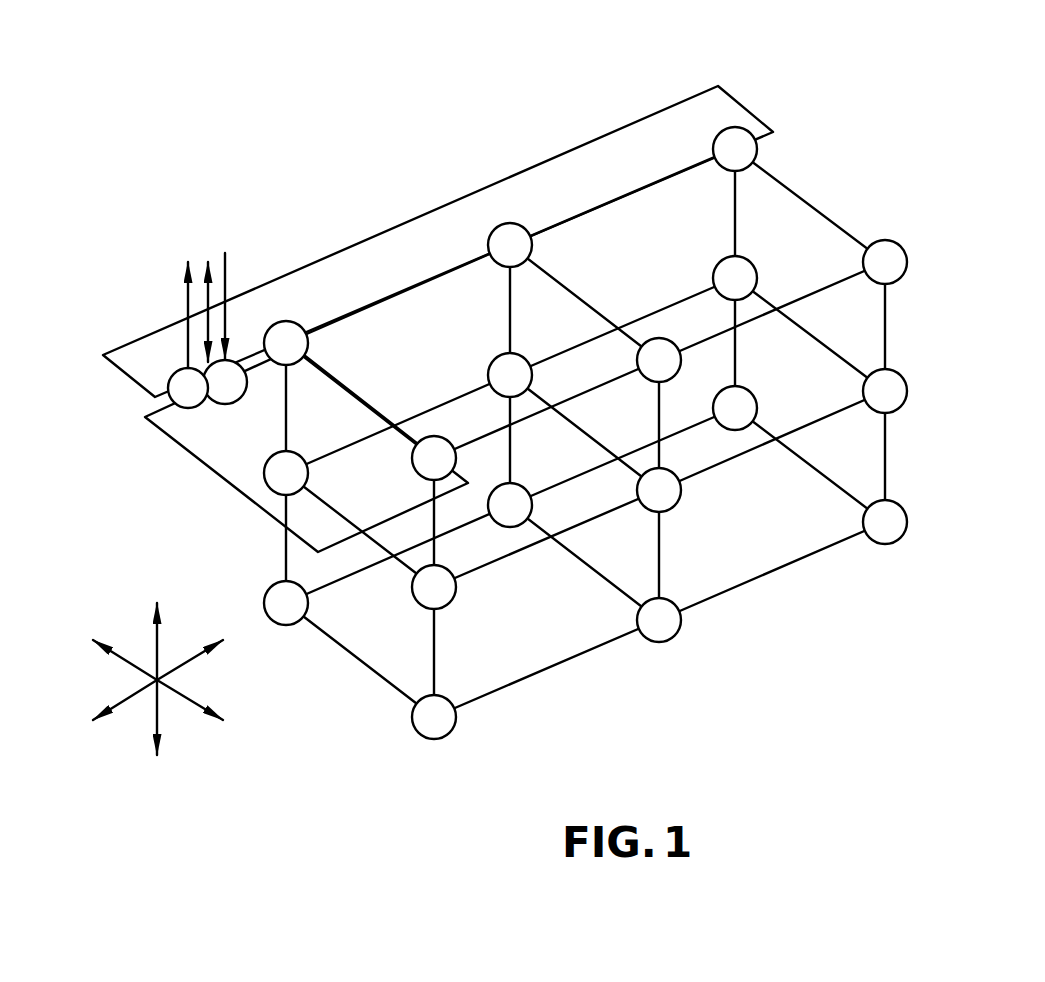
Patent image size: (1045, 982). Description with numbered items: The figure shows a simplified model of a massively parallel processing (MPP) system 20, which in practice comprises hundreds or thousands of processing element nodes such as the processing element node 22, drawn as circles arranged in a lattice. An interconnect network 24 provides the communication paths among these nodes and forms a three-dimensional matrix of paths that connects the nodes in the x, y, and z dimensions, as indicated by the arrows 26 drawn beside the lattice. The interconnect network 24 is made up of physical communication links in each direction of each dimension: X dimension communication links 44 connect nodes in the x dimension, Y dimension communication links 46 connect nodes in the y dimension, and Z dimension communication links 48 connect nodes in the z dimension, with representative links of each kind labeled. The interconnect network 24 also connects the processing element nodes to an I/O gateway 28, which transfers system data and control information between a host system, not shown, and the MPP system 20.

The massively parallel processing (MPP) system 20 is at (428, 118).
The processing element node 22 is at (670, 622).
The interconnect network 24 is at (594, 408).
The arrows 26 is at (200, 757).
The I/O gateway 28 is at (180, 383).
The X dimension communication links 44 is at (612, 200).
The Y dimension communication links 46 is at (435, 652).
The Z dimension communication links 48 is at (835, 219).